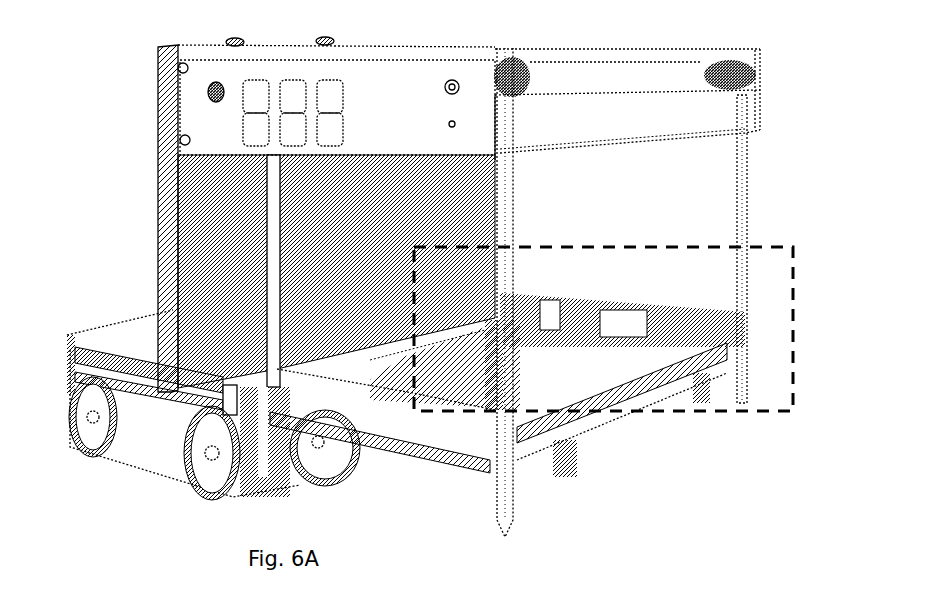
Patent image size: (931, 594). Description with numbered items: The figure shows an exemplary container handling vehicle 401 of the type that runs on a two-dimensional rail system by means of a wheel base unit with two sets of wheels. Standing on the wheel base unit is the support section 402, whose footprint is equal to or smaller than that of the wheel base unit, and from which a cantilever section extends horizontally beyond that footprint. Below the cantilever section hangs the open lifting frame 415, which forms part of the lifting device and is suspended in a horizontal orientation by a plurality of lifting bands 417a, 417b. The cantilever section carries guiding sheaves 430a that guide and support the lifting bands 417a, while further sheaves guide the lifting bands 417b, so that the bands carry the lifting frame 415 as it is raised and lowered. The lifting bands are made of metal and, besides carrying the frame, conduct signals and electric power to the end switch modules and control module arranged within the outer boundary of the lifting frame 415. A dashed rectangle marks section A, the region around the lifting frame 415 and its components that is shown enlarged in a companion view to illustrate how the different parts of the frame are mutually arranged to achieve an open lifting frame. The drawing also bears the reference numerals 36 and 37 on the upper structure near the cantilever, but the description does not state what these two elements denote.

The guide rail 36 is at (318, 65).
The cross frame 37 is at (697, 123).
The container handling vehicle 401 is at (128, 135).
The support section 402 is at (197, 238).
The lifting frame 415 is at (455, 450).
The lifting band 417a is at (740, 193).
The lifting band 417b is at (517, 187).
The guiding sheaves 430a is at (743, 56).
The section A is at (673, 413).